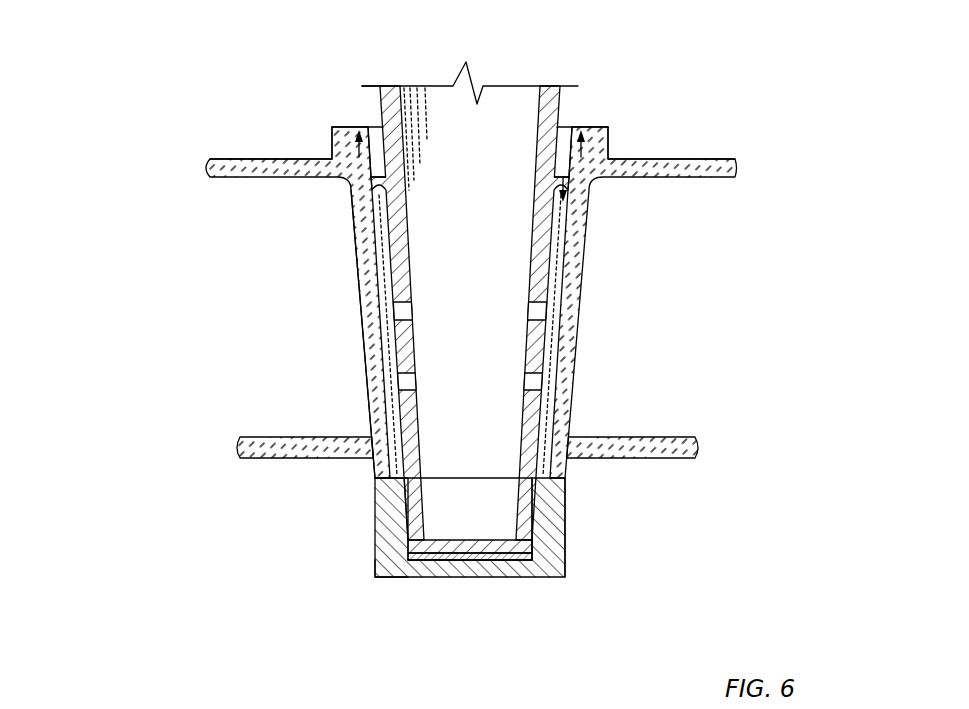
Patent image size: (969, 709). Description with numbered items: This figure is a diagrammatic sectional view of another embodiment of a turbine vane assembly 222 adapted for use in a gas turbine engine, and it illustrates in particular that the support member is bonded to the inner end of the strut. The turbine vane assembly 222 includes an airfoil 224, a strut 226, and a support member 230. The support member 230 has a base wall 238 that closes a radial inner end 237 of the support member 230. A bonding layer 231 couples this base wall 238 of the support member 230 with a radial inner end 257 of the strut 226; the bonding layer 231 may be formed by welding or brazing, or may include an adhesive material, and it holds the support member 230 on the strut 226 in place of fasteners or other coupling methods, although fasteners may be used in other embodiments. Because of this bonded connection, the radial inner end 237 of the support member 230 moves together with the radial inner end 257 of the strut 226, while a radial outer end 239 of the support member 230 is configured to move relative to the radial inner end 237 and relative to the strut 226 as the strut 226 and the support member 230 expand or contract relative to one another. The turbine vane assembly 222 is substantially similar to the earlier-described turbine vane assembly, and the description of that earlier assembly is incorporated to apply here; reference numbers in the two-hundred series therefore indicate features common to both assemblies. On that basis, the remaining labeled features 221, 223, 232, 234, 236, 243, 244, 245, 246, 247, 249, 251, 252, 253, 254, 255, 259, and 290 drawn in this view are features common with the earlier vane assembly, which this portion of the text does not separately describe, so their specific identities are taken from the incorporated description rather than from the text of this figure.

The lower plate 221 is at (250, 470).
The turbine vane assembly 222 is at (190, 125).
The upper plate 223 is at (274, 150).
The airfoil 224 is at (340, 240).
The strut 226 is at (442, 128).
The support member 230 is at (362, 530).
The bonding layer 231 is at (516, 590).
The base outer wall 232 is at (581, 556).
The tube lower wall portion 234 is at (407, 510).
The base side wall 236 is at (560, 495).
The radial inner end 237 is at (399, 590).
The base wall 238 is at (485, 594).
The radial outer end 239 is at (362, 478).
The right annular channel 243 is at (557, 367).
The right sleeve wall 244 is at (586, 242).
The right inlet slot 245 is at (574, 128).
The left sleeve wall 246 is at (348, 198).
The lower right plate 247 is at (558, 444).
The flange 249 is at (605, 183).
The left annular channel 251 is at (397, 415).
The left inlet slot 252 is at (372, 135).
The tube wall 253 is at (424, 460).
The spacers 254 is at (531, 306).
The tube interior 255 is at (497, 197).
The radial inner end 257 is at (490, 558).
The tube top end 259 is at (563, 86).
The outer region 290 is at (598, 298).